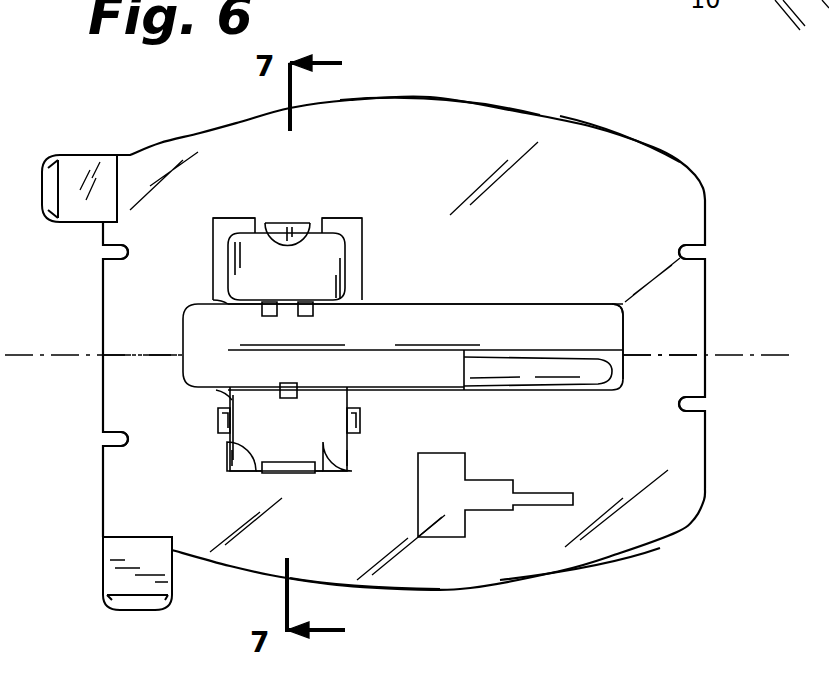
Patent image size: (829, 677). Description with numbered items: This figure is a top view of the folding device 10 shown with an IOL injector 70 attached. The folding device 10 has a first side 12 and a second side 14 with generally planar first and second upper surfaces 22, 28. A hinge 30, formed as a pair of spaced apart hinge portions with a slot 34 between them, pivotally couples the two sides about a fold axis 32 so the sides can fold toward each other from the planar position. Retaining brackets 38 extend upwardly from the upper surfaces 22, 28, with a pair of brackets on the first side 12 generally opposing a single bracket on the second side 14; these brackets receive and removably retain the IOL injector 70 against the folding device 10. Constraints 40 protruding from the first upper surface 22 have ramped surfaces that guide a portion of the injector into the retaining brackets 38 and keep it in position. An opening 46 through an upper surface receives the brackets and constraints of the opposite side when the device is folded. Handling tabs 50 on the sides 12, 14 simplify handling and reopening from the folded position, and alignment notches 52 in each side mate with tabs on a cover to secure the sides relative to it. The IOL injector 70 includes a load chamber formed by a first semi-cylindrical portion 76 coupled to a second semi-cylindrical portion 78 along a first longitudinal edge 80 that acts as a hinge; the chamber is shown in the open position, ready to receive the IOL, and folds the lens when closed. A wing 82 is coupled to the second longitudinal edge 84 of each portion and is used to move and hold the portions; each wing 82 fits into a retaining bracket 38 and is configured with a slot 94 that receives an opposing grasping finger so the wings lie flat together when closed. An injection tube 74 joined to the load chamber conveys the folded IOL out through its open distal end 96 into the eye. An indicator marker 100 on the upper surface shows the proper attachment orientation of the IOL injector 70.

The folding device 10 is at (676, 129).
The first side 12 is at (602, 568).
The second side 14 is at (595, 124).
The first upper surface 22 is at (382, 576).
The second upper surface 28 is at (484, 125).
The hinge 30 is at (130, 356).
The fold axis 32 is at (736, 355).
The slot 34 is at (183, 330).
The retaining bracket 38 is at (292, 221).
The constraint 40 is at (357, 425).
The opening 46 is at (355, 218).
The handling tab 50 is at (78, 155).
The alignment notch 52 is at (103, 252).
The IOL injector 70 is at (362, 298).
The injection tube 74 is at (510, 357).
The first semi-cylindrical portion 76 is at (432, 380).
The second semi-cylindrical portion 78 is at (362, 323).
The first longitudinal edge 80 is at (368, 350).
The wing 82 is at (257, 232).
The second longitudinal edge 84 is at (228, 300).
The slot 94 is at (300, 302).
The open distal end 96 is at (602, 392).
The indicator marker 100 is at (500, 510).